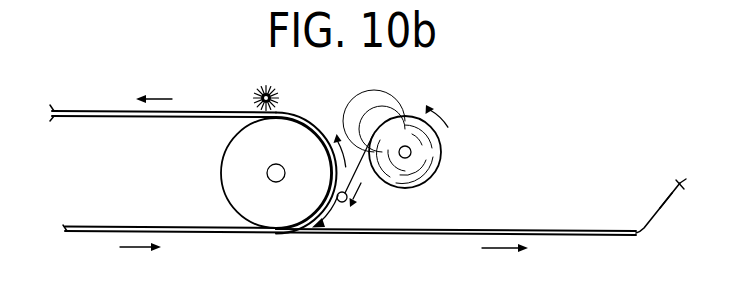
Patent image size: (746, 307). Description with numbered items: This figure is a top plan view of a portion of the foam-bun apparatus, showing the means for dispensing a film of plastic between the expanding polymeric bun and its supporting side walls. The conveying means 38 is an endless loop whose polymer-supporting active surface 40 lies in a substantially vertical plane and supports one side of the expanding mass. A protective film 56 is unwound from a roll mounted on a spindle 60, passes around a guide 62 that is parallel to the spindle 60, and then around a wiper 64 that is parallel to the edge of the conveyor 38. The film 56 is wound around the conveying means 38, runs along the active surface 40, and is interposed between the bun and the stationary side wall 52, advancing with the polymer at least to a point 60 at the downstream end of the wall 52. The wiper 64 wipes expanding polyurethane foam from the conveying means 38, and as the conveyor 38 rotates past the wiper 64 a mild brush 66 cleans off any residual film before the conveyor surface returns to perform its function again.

The conveying means 38 is at (197, 245).
The active surface 40 is at (80, 234).
The stationary side wall 52 is at (488, 230).
The protective film 56 is at (667, 208).
The spindle 60 is at (642, 217).
The guide 62 is at (337, 198).
The wiper 64 is at (308, 232).
The brush 66 is at (283, 95).